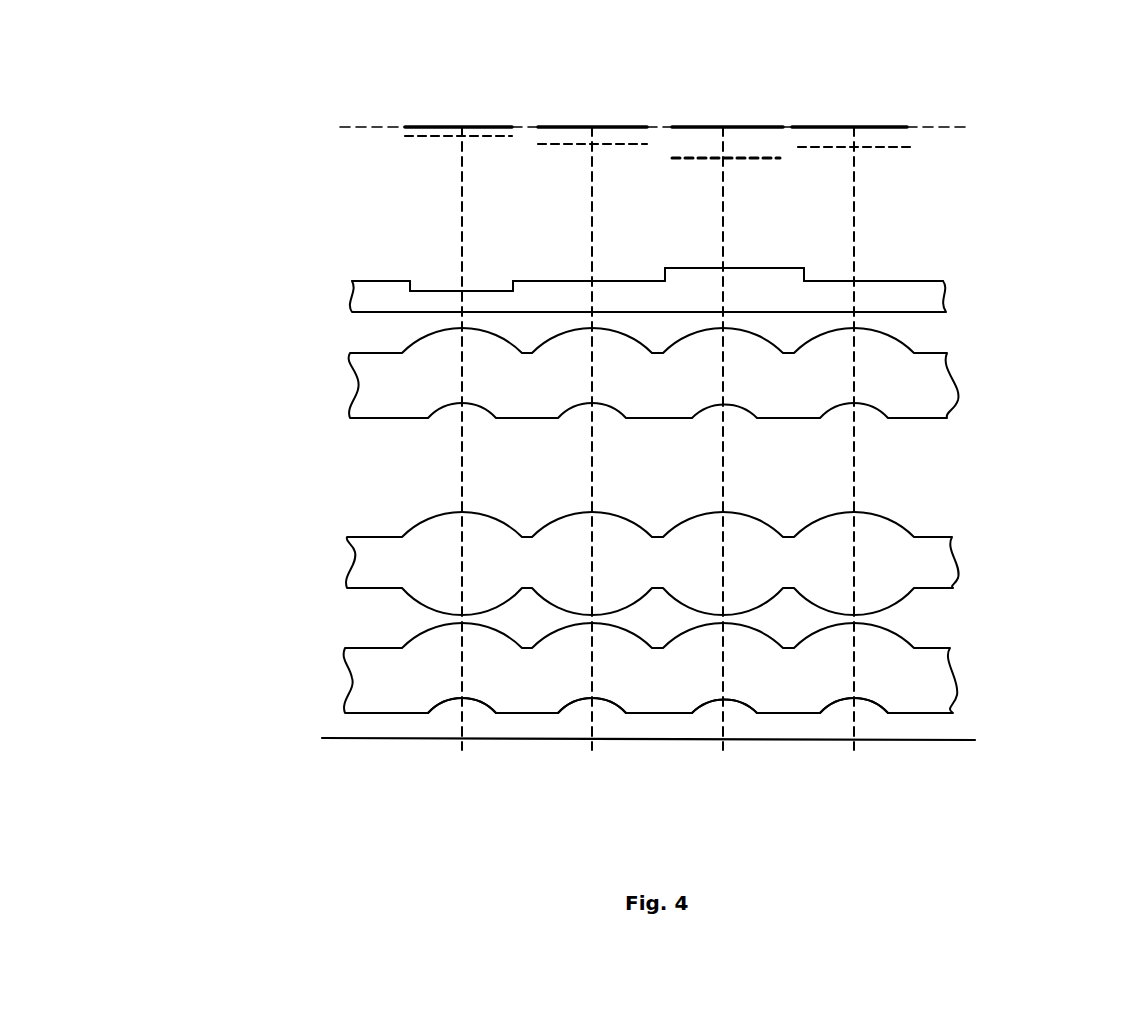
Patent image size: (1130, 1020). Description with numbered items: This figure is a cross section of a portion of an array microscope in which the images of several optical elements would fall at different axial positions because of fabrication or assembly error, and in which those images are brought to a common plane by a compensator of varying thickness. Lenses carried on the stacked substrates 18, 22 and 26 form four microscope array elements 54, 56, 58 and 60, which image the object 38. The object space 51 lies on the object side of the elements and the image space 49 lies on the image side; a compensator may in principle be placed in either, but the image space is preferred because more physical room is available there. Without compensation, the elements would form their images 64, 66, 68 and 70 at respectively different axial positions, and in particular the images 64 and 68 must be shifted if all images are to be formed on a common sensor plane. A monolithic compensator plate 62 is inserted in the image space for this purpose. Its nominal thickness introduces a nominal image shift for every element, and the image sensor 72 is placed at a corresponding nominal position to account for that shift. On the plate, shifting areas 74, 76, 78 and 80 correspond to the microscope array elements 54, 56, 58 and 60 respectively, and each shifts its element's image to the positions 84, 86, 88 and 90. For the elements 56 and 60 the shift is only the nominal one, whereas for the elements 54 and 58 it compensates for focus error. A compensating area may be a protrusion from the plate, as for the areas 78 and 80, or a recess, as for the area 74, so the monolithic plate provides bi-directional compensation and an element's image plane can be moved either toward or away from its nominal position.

The stacked substrate 18 is at (318, 680).
The stacked substrate 22 is at (327, 563).
The stacked substrate 26 is at (322, 377).
The object 38 is at (318, 738).
The image space 49 is at (925, 222).
The object space 51 is at (942, 730).
The microscope array element 54 is at (450, 708).
The microscope array element 56 is at (582, 708).
The microscope array element 58 is at (713, 714).
The microscope array element 60 is at (843, 714).
The monolithic compensator plate 62 is at (335, 293).
The image 64 is at (444, 140).
The image 66 is at (578, 150).
The image 68 is at (748, 165).
The image 70 is at (872, 152).
The image sensor 72 is at (327, 128).
The shifting area 74 is at (470, 277).
The shifting area 76 is at (600, 277).
The shifting area 78 is at (766, 260).
The shifting area 80 is at (897, 278).
The shifted image position 84 is at (462, 125).
The shifted image position 86 is at (592, 125).
The shifted image position 88 is at (723, 125).
The shifted image position 90 is at (854, 125).